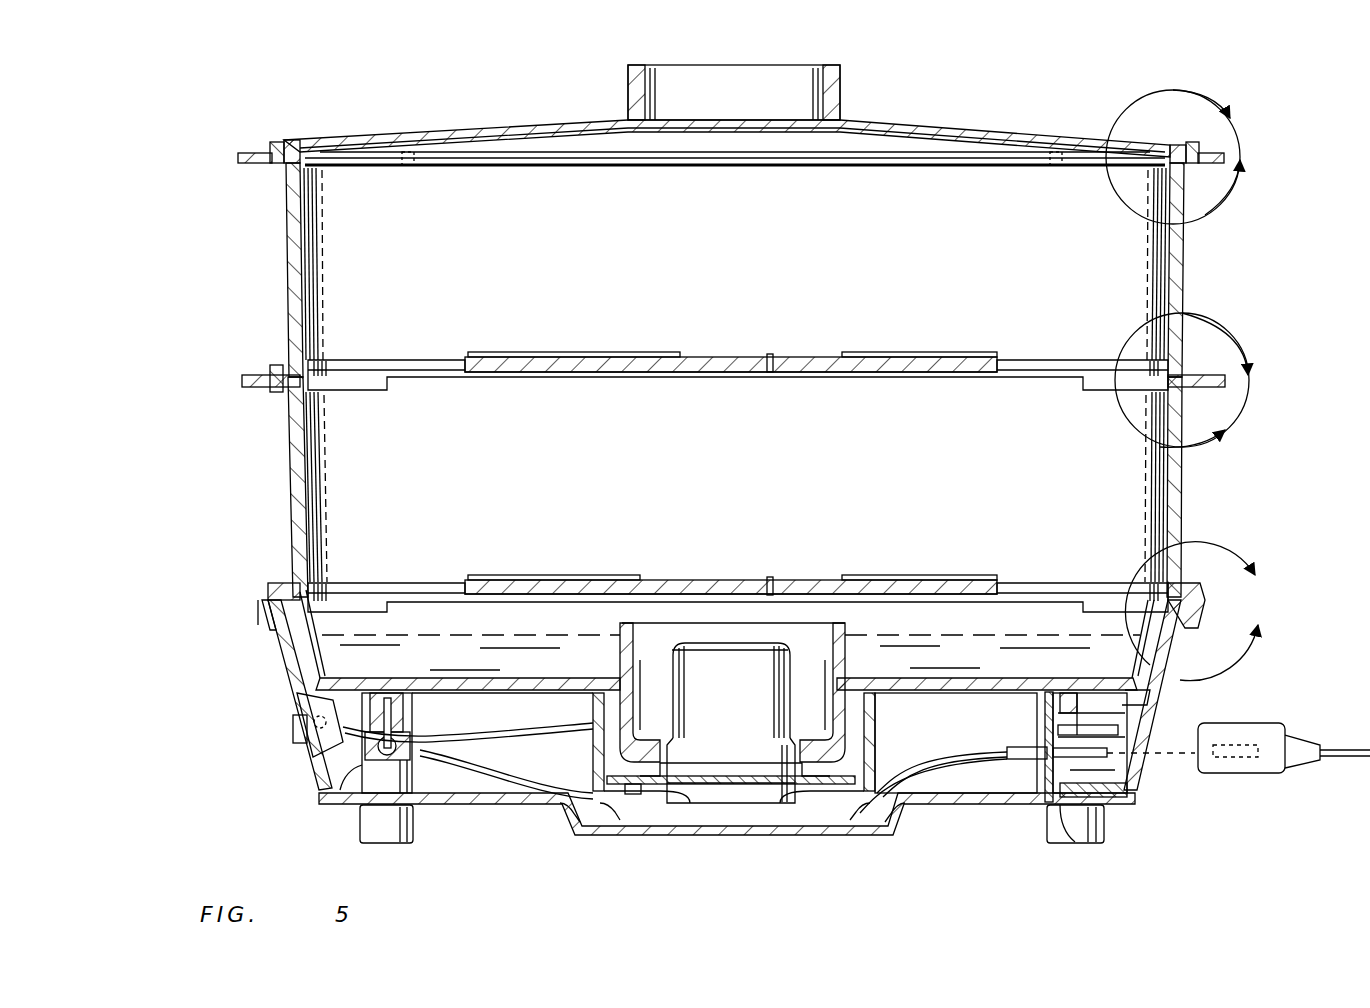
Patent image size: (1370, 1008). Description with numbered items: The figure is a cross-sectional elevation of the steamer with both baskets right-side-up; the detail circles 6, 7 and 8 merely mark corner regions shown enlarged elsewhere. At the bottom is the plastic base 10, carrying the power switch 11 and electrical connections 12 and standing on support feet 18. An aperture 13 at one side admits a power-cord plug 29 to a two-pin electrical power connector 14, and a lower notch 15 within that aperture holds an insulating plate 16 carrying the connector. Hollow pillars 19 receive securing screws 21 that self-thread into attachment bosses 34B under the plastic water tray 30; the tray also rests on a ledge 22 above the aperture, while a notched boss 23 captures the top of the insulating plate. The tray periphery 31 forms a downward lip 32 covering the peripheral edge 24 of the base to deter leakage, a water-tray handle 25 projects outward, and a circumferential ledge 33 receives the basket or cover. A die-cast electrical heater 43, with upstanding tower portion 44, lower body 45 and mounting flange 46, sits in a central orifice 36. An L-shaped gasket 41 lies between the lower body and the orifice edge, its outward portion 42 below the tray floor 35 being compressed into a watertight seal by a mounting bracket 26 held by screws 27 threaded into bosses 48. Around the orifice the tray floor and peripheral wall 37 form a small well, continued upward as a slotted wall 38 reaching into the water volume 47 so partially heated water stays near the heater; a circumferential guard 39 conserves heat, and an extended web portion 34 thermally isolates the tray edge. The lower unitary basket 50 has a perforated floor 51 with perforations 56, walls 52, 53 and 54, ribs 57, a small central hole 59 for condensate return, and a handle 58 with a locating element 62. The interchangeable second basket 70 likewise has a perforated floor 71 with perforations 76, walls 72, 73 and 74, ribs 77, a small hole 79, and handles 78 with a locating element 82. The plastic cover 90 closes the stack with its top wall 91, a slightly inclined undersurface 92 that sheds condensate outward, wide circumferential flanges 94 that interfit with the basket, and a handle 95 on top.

The detail circle 6 is at (1180, 157).
The detail circle 7 is at (1182, 380).
The detail circle 8 is at (1192, 611).
The base 10 is at (298, 775).
The power switch 11 is at (298, 733).
The electrical connections 12 is at (510, 800).
The aperture 13 is at (1140, 730).
The two-pin electrical power connector 14 is at (1107, 760).
The lower notch 15 is at (1068, 842).
The insulating plate 16 is at (1118, 733).
The support feet 18 is at (395, 835).
The pillars 19 is at (400, 780).
The water-tray securing screw 21 is at (345, 785).
The ledge 22 is at (1125, 690).
The notched boss 23 is at (1040, 725).
The peripheral edge of the base 24 is at (276, 650).
The water-tray handle 25 is at (1190, 660).
The mounting bracket 26 is at (620, 797).
The mounting screw 27 is at (650, 792).
The power-cord plug 29 is at (1280, 775).
The water tray 30 is at (240, 610).
The periphery of the tray 31 is at (282, 583).
The lip 32 is at (265, 628).
The circumferential ledge 33 is at (316, 655).
The extended web portion 34 is at (480, 678).
The attachment boss 34B is at (405, 720).
The tray floor 35 is at (822, 735).
The central orifice 36 is at (692, 760).
The peripheral wall of the well 37 is at (642, 722).
The slotted wall 38 is at (620, 660).
The circumferential guard 39 is at (888, 740).
The gasket 41 is at (800, 722).
The outward-extending gasket portion 42 is at (822, 778).
The electrical heater 43 is at (640, 650).
The upstanding tower portion 44 is at (745, 650).
The lower body 45 is at (790, 786).
The mounting flange 46 is at (750, 803).
The water volume 47 is at (980, 650).
The boss 48 is at (520, 782).
The basket 50 is at (1212, 470).
The perforated floor 51 is at (320, 582).
The basket wall 52 is at (305, 445).
The basket wall 53 is at (715, 445).
The basket wall 54 is at (1183, 508).
The lower tray floor 56 is at (410, 582).
The floor ribs 57 is at (502, 575).
The basket handle 58 is at (243, 382).
The small hole 59 is at (775, 577).
The flange post 62 is at (275, 365).
The second basket 70 is at (1212, 243).
The perforated floor 71 is at (822, 355).
The basket wall 72 is at (286, 205).
The basket wall 73 is at (725, 252).
The basket wall 74 is at (1184, 285).
The basket-floor perforations 76 is at (385, 362).
The floor ribs 77 is at (512, 352).
The basket handle 78 is at (238, 158).
The small hole 79 is at (770, 354).
The flange post 82 is at (278, 142).
The cover 90 is at (935, 100).
The lid top wall 91 is at (595, 120).
The cover undersurface 92 is at (990, 165).
The circumferential flanges 94 is at (1192, 142).
The cover handle 95 is at (840, 92).